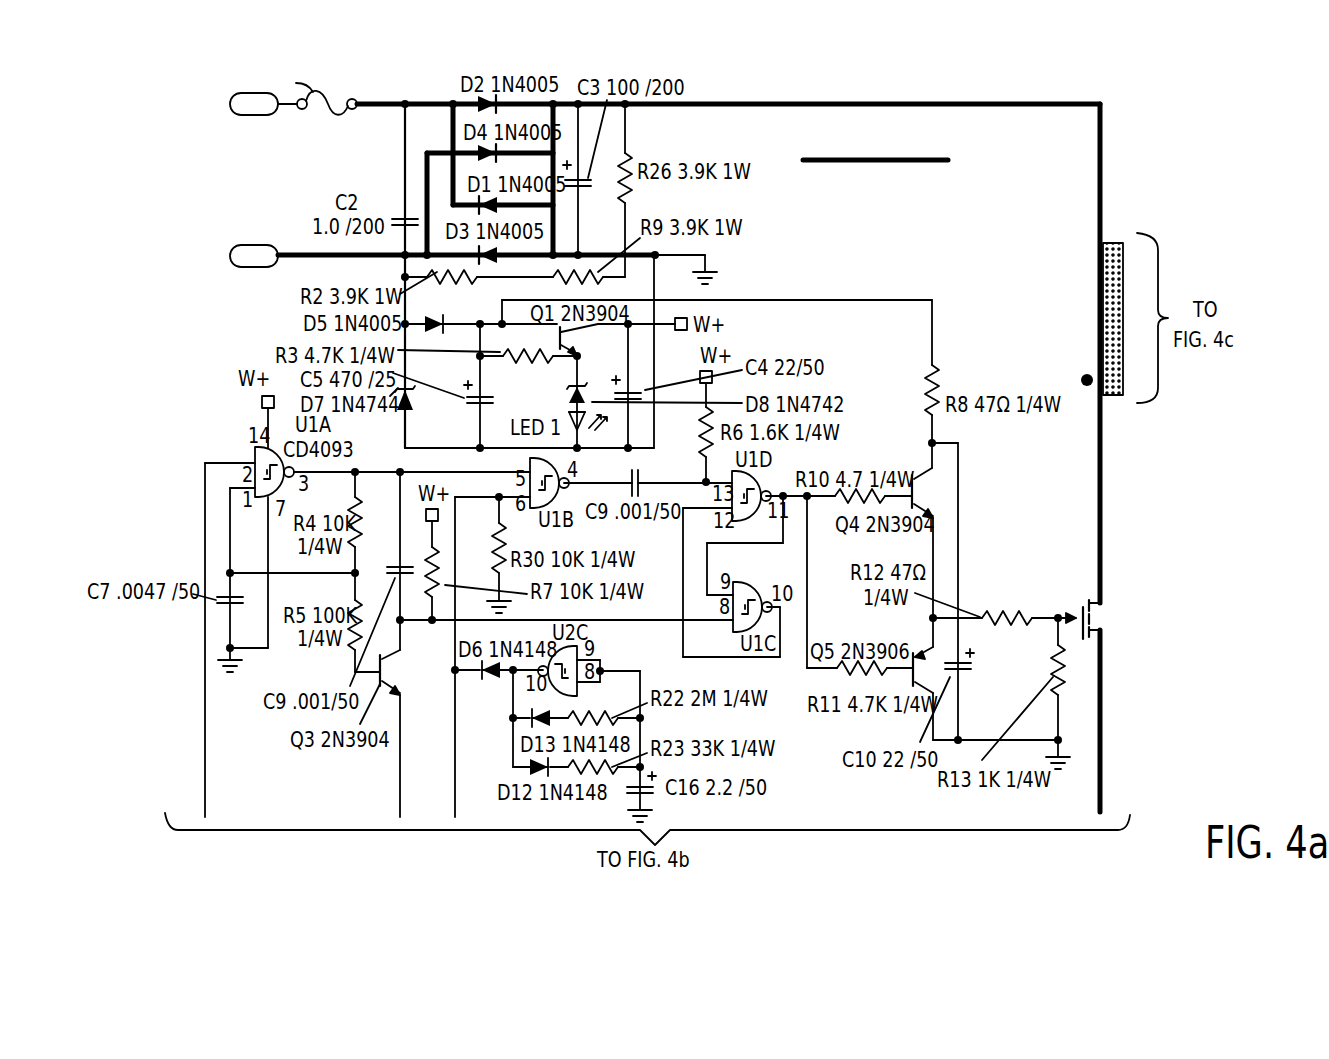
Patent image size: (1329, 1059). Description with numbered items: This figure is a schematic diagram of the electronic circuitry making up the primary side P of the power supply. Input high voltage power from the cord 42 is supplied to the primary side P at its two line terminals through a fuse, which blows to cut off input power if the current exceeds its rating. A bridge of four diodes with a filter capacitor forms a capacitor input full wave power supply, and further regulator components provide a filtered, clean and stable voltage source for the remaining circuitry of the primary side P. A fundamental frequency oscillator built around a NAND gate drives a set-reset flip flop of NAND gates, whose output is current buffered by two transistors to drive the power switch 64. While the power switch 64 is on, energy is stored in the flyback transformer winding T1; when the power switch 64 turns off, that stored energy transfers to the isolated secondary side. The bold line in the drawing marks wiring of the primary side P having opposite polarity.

The cord 42 is at (188, 206).
The power switch 64 is at (1087, 553).
The primary side P is at (771, 101).
The transformer T1 primary winding T1 is at (1094, 304).